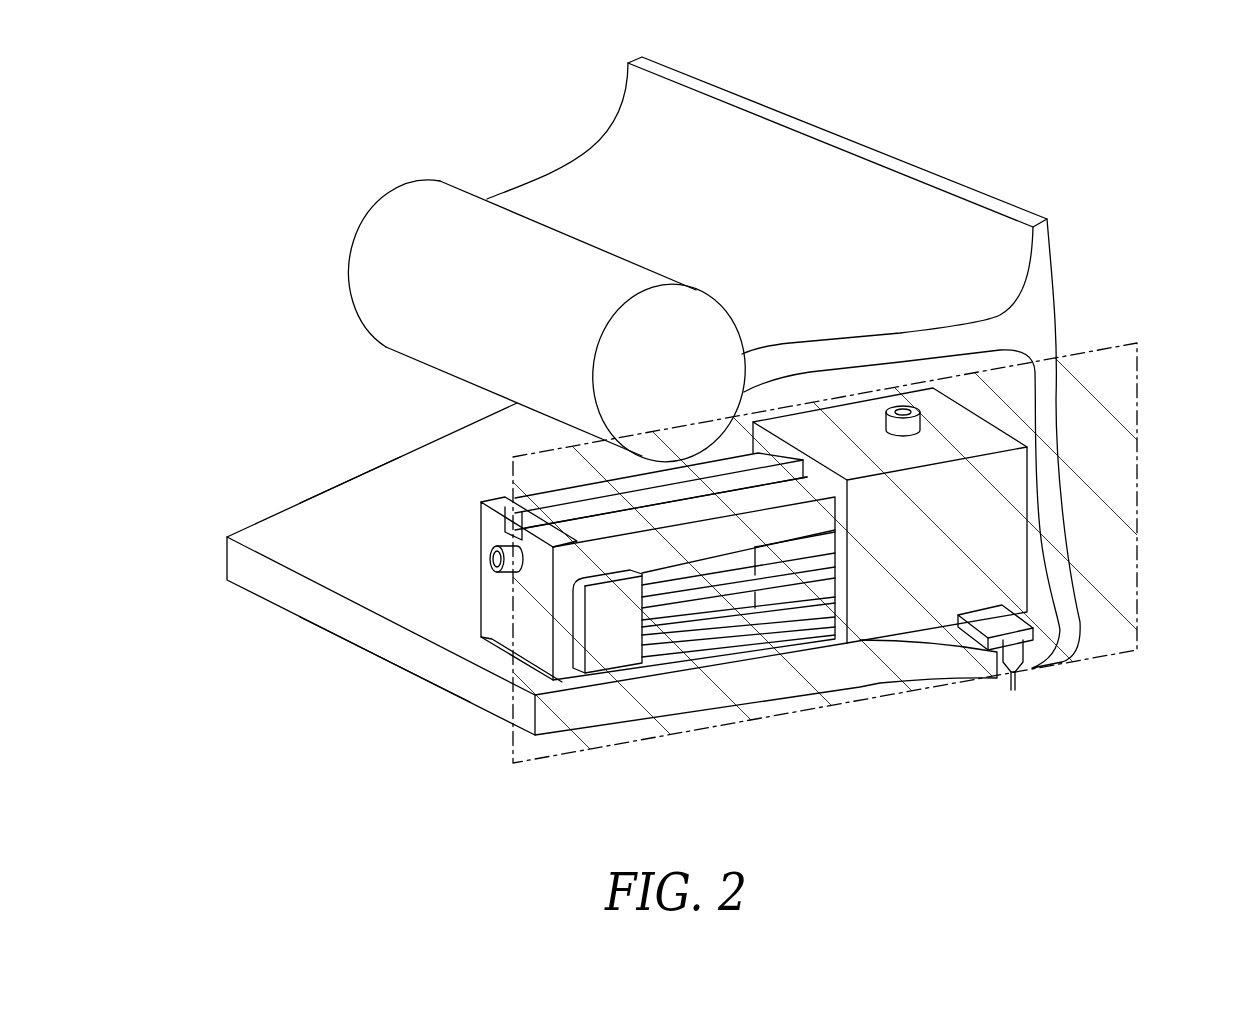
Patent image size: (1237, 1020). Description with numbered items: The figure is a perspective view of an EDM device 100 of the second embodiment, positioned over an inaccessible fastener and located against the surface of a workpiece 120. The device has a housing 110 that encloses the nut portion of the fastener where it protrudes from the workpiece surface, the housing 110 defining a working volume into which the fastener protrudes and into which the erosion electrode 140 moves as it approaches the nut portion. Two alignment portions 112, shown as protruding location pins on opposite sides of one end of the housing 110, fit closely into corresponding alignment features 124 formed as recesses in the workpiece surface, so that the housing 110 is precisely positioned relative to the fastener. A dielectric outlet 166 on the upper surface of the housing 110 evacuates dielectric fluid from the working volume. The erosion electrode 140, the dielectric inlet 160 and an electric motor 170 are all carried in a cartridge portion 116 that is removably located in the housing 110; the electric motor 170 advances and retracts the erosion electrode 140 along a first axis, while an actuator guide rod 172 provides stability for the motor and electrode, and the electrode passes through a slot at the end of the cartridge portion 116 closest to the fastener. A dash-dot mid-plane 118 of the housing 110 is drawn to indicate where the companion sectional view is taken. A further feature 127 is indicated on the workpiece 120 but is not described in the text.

The EDM device 100 is at (455, 498).
The housing 110 is at (988, 424).
The alignment portion 112 is at (1010, 678).
The cartridge portion 116 is at (470, 656).
The mid-plane 118 is at (1095, 350).
The workpiece 120 is at (318, 492).
The alignment feature 124 is at (1022, 673).
The top surface of base plate 127 is at (423, 622).
The erosion electrode 140 is at (715, 628).
The dielectric inlet 160 is at (492, 548).
The dielectric outlet 166 is at (887, 410).
The electric motor 170 is at (615, 648).
The actuator guide rod 172 is at (728, 580).